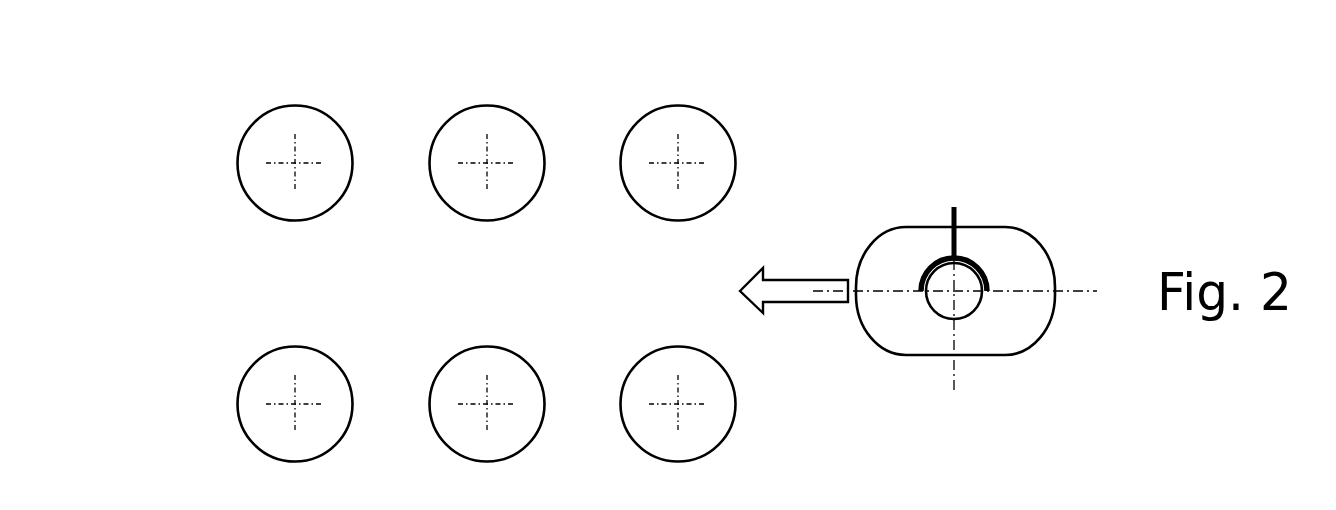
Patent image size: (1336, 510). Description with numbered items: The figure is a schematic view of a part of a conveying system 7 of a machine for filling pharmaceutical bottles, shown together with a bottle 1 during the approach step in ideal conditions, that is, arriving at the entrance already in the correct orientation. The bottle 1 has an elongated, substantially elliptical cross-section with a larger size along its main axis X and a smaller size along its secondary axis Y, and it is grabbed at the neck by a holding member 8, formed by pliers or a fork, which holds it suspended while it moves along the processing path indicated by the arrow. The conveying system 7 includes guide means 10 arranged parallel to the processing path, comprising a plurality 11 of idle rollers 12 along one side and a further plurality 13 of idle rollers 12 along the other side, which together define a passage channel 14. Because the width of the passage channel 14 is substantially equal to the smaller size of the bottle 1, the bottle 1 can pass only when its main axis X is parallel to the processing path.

The bottle 1 is at (1018, 248).
The conveying system 7 is at (196, 110).
The holding member 8 is at (960, 227).
The guide means 10 is at (848, 158).
The plurality of idle rollers 11 is at (218, 208).
The idle roller 12 is at (512, 137).
The further plurality of idle rollers 13 is at (218, 400).
The passage channel 14 is at (422, 304).